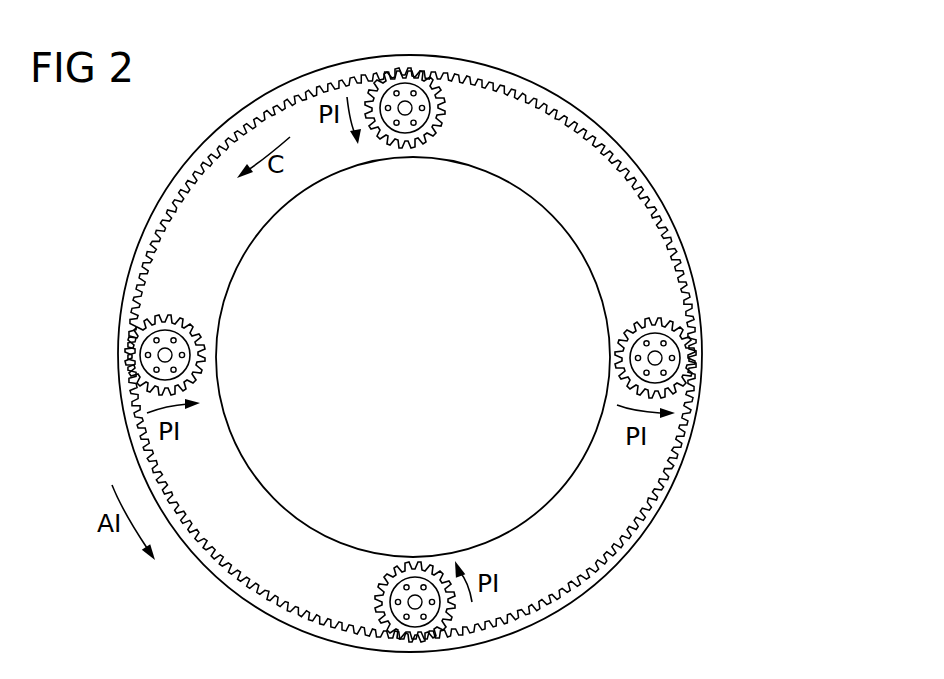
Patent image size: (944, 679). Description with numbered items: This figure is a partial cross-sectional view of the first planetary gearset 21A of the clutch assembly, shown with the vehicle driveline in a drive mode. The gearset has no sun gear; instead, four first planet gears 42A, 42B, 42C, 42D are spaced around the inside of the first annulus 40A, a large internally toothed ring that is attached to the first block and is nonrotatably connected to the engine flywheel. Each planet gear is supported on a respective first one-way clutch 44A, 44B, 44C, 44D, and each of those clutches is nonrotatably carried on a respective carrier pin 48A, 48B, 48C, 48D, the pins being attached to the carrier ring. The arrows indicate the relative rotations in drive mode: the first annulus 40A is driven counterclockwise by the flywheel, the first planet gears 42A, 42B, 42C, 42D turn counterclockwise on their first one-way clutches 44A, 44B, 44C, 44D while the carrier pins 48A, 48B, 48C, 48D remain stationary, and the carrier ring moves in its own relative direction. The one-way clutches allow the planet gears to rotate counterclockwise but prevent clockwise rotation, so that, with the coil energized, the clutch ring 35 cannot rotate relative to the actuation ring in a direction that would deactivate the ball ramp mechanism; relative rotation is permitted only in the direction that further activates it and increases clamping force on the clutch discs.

The first planetary gearset 21A is at (714, 511).
The clutch ring 35 is at (592, 552).
The first annulus 40A is at (459, 353).
The first planet gear 42A is at (442, 98).
The first one-way clutch 44A is at (430, 92).
The carrier pin 48A is at (402, 104).
The first planet gear 42B is at (692, 342).
The first one-way clutch 44B is at (672, 375).
The carrier pin 48B is at (658, 355).
The first planet gear 42C is at (380, 622).
The first one-way clutch 44C is at (430, 598).
The carrier pin 48C is at (406, 600).
The first planet gear 42D is at (136, 374).
The first one-way clutch 44D is at (150, 346).
The carrier pin 48D is at (163, 350).